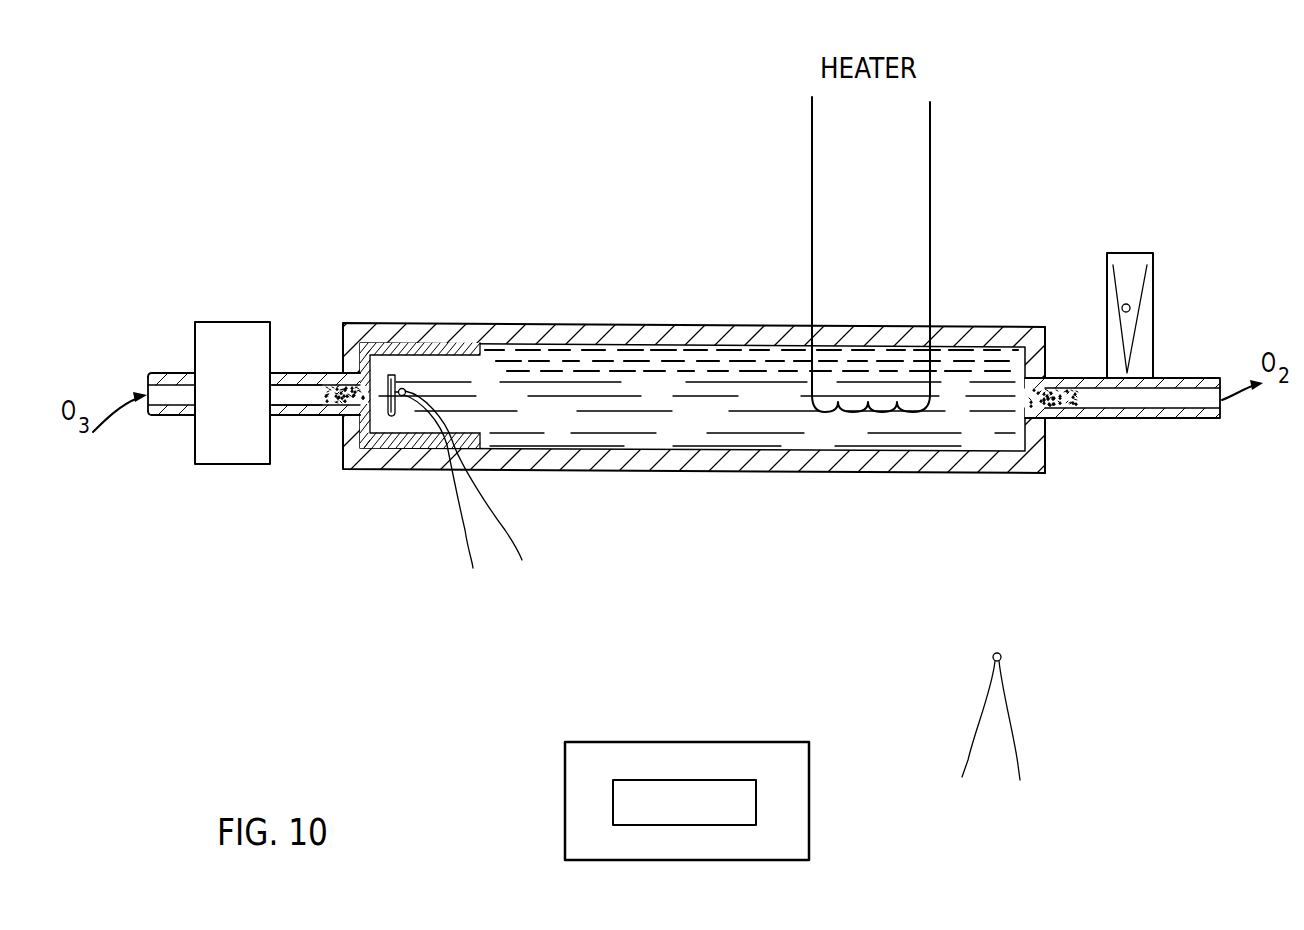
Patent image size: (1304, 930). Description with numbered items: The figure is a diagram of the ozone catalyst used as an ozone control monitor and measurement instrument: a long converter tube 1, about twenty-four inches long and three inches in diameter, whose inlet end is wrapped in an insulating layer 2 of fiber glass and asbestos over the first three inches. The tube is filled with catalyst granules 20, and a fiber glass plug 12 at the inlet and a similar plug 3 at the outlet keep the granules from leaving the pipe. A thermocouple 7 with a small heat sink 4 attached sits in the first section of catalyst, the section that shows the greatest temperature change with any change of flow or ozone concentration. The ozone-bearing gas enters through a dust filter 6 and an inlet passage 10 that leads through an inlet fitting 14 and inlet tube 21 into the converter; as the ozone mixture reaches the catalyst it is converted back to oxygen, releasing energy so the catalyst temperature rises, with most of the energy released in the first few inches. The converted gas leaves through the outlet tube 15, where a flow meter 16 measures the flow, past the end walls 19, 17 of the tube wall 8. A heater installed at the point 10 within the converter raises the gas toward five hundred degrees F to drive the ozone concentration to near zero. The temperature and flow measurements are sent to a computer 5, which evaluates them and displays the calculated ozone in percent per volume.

The reaction vessel housing 1 is at (372, 336).
The inner liner 2 is at (458, 344).
The outlet stopper 3 is at (1120, 400).
The electrode tip 4 is at (391, 417).
The indicator display 5 is at (585, 787).
The gas supply block 6 is at (235, 448).
The electrode 7 is at (396, 376).
The vessel wall 8 is at (698, 334).
The heater point 10 is at (175, 397).
The inlet stopper 12 is at (345, 403).
The inlet connection 14 is at (355, 386).
The outlet tube 15 is at (1222, 414).
The valve 16 is at (1153, 310).
The lower end wall 17 is at (1045, 440).
The upper end wall 19 is at (1040, 353).
The liquid 20 is at (713, 432).
The inlet tube 21 is at (298, 393).